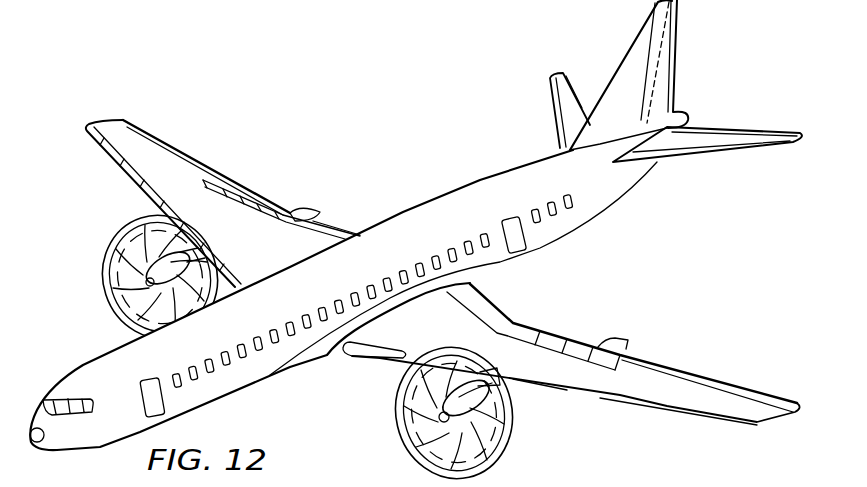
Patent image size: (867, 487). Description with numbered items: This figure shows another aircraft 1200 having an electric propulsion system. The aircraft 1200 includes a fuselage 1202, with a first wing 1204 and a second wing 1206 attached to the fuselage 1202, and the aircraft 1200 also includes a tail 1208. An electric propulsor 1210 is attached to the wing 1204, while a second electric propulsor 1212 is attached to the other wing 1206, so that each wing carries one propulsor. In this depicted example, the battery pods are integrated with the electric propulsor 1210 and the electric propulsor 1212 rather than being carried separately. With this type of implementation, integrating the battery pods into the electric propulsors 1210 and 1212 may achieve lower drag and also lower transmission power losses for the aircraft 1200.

The aircraft 1200 is at (183, 70).
The fuselage 1202 is at (396, 206).
The wing 1204 is at (110, 132).
The wing 1206 is at (658, 377).
The tail 1208 is at (667, 55).
The electric propulsor 1210 is at (150, 272).
The electric propulsor 1212 is at (520, 395).